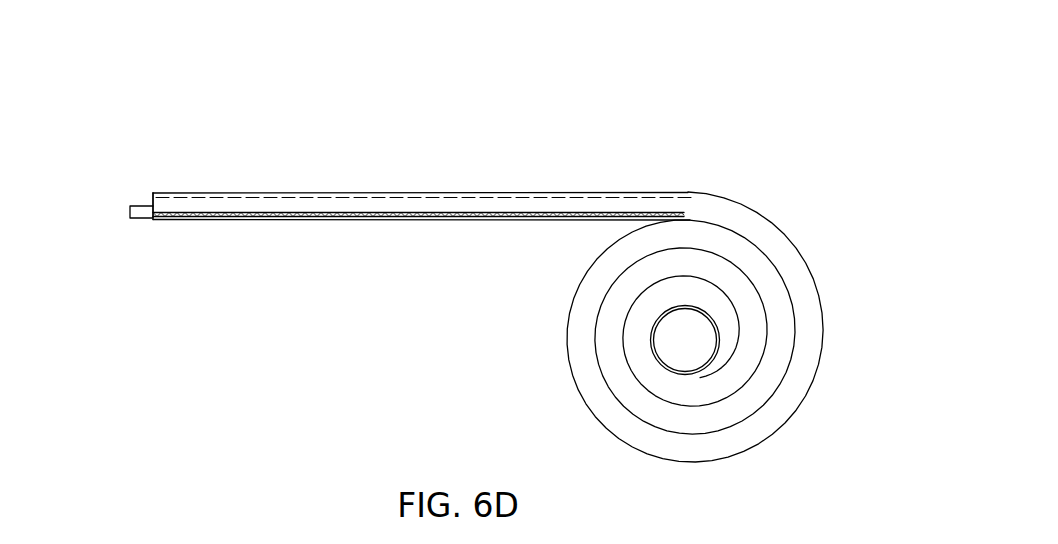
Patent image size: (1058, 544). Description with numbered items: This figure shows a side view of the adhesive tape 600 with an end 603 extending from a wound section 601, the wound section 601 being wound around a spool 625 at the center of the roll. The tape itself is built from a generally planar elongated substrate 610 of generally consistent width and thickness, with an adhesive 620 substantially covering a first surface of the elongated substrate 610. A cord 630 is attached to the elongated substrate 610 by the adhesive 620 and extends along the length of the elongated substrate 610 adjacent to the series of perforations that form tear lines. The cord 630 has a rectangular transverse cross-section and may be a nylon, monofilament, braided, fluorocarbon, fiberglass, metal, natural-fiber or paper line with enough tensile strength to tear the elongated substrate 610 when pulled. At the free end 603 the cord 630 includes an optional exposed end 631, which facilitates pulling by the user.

The adhesive tape 600 is at (178, 109).
The wound section 601 is at (804, 286).
The end 603 is at (451, 202).
The elongated substrate 610 is at (363, 207).
The adhesive 620 is at (363, 217).
The spool 625 is at (668, 350).
The cord 630 is at (125, 211).
The exposed end 631 is at (139, 205).